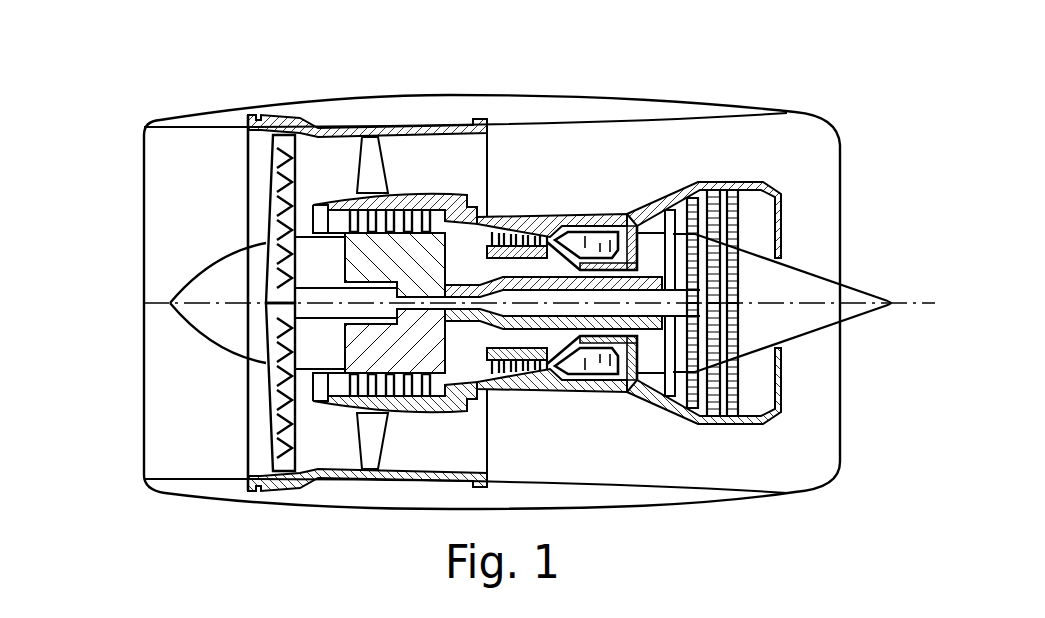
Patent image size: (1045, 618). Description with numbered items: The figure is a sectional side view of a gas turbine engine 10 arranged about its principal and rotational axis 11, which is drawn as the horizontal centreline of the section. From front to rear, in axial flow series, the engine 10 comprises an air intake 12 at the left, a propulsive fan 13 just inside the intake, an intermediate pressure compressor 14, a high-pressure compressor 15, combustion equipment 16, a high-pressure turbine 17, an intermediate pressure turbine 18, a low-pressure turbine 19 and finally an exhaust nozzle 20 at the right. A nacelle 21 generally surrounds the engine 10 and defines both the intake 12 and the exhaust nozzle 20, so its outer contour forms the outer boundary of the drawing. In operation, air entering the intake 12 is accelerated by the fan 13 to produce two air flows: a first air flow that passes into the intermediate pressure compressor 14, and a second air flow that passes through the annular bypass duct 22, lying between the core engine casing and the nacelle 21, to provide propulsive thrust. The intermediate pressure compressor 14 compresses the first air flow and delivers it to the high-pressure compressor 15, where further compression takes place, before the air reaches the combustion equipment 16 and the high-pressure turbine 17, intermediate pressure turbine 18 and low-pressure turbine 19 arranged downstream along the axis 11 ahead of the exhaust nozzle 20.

The gas turbine engine 10 is at (118, 193).
The principal and rotational axis 11 is at (136, 302).
The air intake 12 is at (212, 127).
The propulsive fan 13 is at (265, 445).
The intermediate pressure compressor 14 is at (395, 385).
The high-pressure compressor 15 is at (505, 222).
The combustion equipment 16 is at (587, 378).
The high-pressure turbine 17 is at (627, 390).
The intermediate pressure turbine 18 is at (667, 197).
The low-pressure turbine 19 is at (686, 397).
The exhaust nozzle 20 is at (842, 465).
The nacelle 21 is at (650, 94).
The bypass duct 22 is at (453, 179).